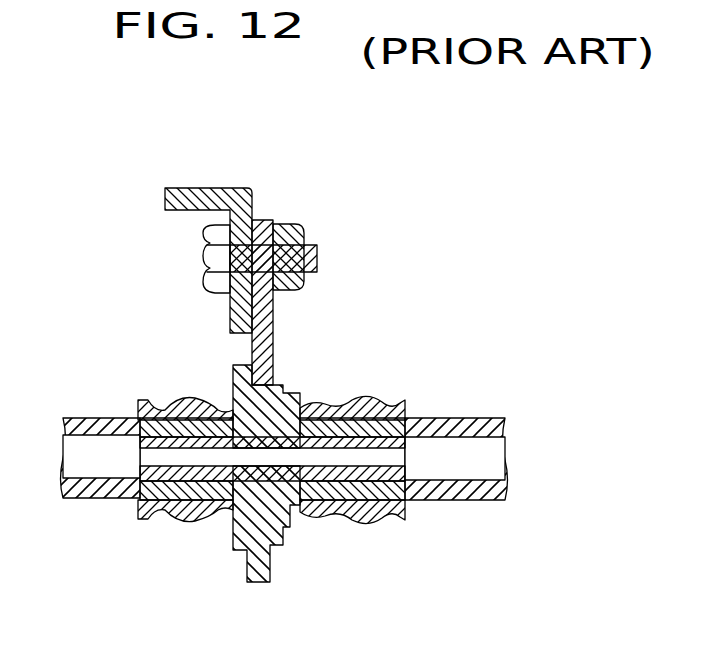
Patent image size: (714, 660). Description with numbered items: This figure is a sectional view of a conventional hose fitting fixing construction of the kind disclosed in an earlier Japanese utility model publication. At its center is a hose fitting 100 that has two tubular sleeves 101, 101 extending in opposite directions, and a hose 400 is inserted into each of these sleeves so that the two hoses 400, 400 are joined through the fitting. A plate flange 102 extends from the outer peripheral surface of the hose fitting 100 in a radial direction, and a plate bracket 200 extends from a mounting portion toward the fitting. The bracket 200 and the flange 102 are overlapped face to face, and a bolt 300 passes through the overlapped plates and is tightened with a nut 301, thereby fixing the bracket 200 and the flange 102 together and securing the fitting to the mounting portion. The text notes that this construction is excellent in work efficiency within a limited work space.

The hose fitting 100 is at (308, 525).
The tubular sleeve 101 is at (188, 402).
The plate flange 102 is at (275, 325).
The plate bracket 200 is at (198, 192).
The bolt 300 is at (222, 255).
The nut 301 is at (300, 232).
The hose 400 is at (93, 500).